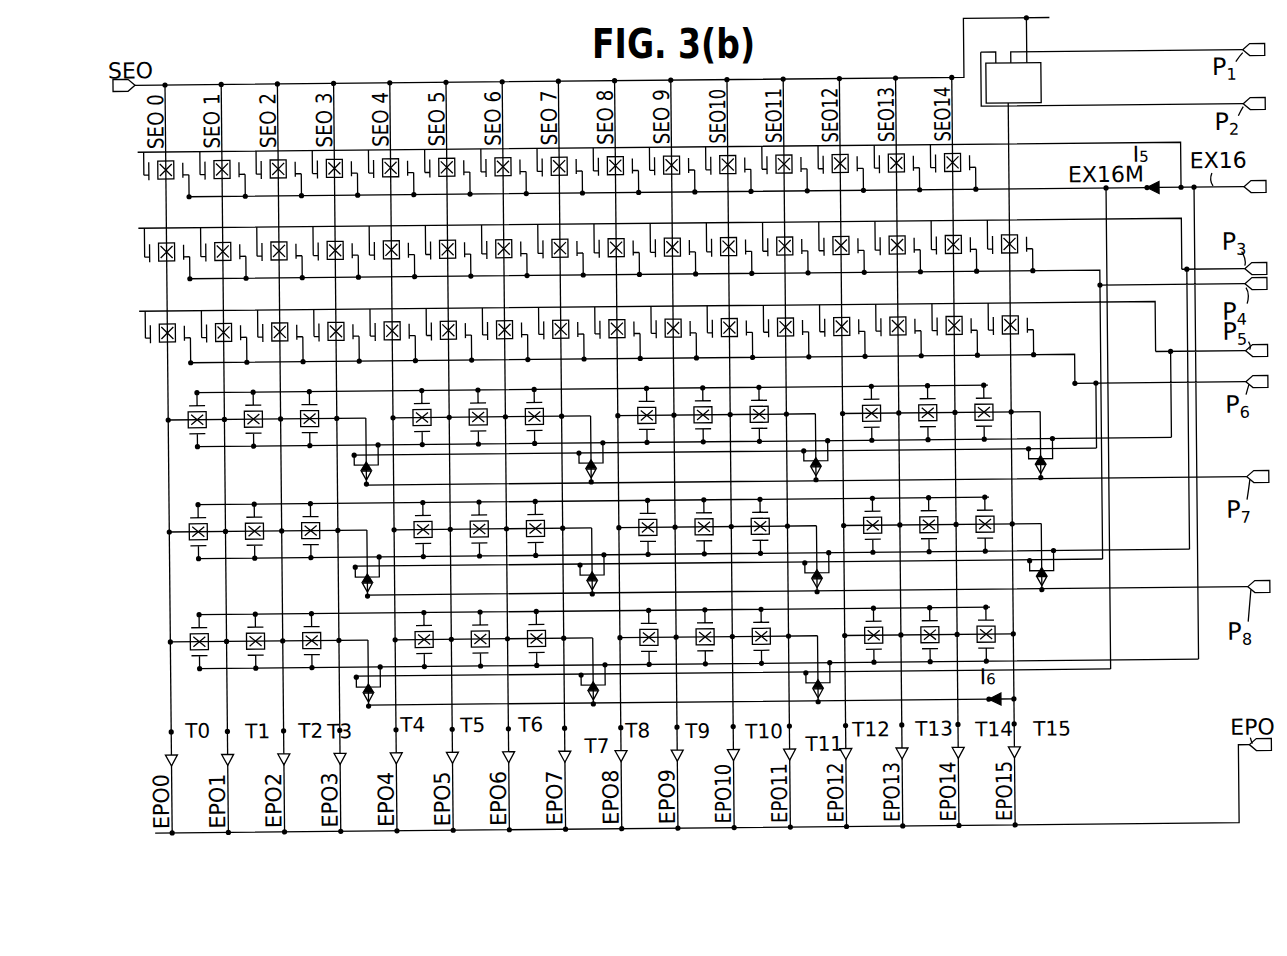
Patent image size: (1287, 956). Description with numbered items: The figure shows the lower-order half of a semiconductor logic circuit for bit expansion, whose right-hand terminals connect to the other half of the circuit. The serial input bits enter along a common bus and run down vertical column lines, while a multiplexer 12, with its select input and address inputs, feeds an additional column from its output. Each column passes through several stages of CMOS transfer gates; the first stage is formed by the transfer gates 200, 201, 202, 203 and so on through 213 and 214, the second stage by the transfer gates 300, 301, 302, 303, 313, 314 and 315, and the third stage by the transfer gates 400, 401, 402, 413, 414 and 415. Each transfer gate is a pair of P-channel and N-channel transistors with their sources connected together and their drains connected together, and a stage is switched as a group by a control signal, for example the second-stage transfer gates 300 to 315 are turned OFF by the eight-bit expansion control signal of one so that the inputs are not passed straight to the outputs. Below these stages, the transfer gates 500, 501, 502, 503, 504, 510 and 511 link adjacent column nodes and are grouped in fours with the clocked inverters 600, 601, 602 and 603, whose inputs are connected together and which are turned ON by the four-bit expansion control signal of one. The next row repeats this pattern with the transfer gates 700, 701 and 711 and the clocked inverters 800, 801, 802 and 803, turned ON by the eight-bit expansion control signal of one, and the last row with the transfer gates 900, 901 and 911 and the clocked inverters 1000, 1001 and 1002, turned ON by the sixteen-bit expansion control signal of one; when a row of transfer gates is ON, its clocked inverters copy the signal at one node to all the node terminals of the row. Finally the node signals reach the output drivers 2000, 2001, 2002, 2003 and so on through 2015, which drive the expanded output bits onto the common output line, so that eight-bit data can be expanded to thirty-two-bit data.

The multiplexer 12 is at (1058, 61).
The CMOS transfer gate 200 is at (154, 176).
The CMOS transfer gate 201 is at (210, 188).
The CMOS transfer gate 202 is at (266, 188).
The CMOS transfer gate 203 is at (322, 188).
The CMOS transfer gate 213 is at (883, 190).
The CMOS transfer gate 214 is at (938, 190).
The CMOS transfer gate 300 is at (154, 258).
The CMOS transfer gate 301 is at (210, 270).
The CMOS transfer gate 302 is at (266, 270).
The CMOS transfer gate 303 is at (322, 270).
The CMOS transfer gate 313 is at (883, 271).
The CMOS transfer gate 314 is at (938, 271).
The CMOS transfer gate 315 is at (993, 272).
The CMOS transfer gate 400 is at (154, 340).
The CMOS transfer gate 401 is at (210, 352).
The CMOS transfer gate 402 is at (266, 352).
The CMOS transfer gate 413 is at (883, 355).
The CMOS transfer gate 414 is at (938, 355).
The CMOS transfer gate 415 is at (993, 356).
The CMOS transfer gate 500 is at (190, 440).
The CMOS transfer gate 501 is at (246, 440).
The CMOS transfer gate 502 is at (302, 440).
The CMOS transfer gate 503 is at (410, 441).
The CMOS transfer gate 504 is at (466, 442).
The CMOS transfer gate 510 is at (920, 443).
The CMOS transfer gate 511 is at (976, 443).
The clocked inverter 600 is at (358, 480).
The clocked inverter 601 is at (582, 478).
The clocked inverter 602 is at (818, 479).
The clocked inverter 603 is at (1035, 480).
The CMOS transfer gate 700 is at (190, 558).
The CMOS transfer gate 701 is at (246, 558).
The CMOS transfer gate 711 is at (978, 554).
The clocked inverter 800 is at (358, 590).
The clocked inverter 801 is at (585, 592).
The clocked inverter 802 is at (810, 592).
The clocked inverter 803 is at (1035, 592).
The CMOS transfer gate 900 is at (190, 668).
The CMOS transfer gate 901 is at (246, 668).
The CMOS transfer gate 911 is at (990, 643).
The clocked inverter 1000 is at (360, 702).
The clocked inverter 1001 is at (586, 702).
The clocked inverter 1002 is at (810, 702).
The output driver 2000 is at (165, 765).
The output driver 2001 is at (221, 762).
The output driver 2002 is at (277, 762).
The output driver 2003 is at (336, 762).
The output driver 2015 is at (1010, 762).